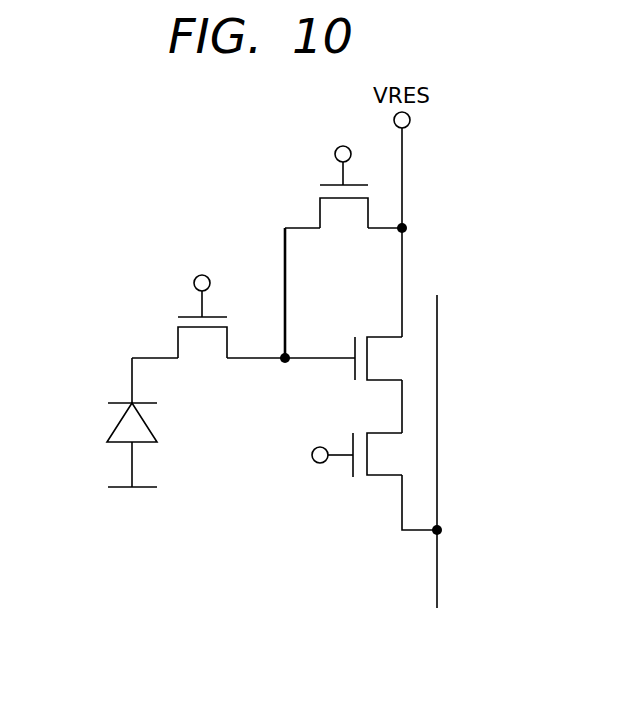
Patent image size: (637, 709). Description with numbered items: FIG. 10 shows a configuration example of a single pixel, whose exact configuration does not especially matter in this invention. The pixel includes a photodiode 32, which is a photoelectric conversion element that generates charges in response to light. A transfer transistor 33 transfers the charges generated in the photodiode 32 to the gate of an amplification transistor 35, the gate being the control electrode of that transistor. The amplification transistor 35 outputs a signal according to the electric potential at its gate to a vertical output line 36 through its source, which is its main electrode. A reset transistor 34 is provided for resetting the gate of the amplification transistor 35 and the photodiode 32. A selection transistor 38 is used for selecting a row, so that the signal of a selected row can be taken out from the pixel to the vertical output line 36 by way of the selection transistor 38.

The photodiode 32 is at (110, 425).
The transfer transistor 33 is at (183, 312).
The reset transistor 34 is at (324, 182).
The amplification transistor 35 is at (360, 332).
The vertical output line 36 is at (437, 330).
The selection transistor 38 is at (347, 473).